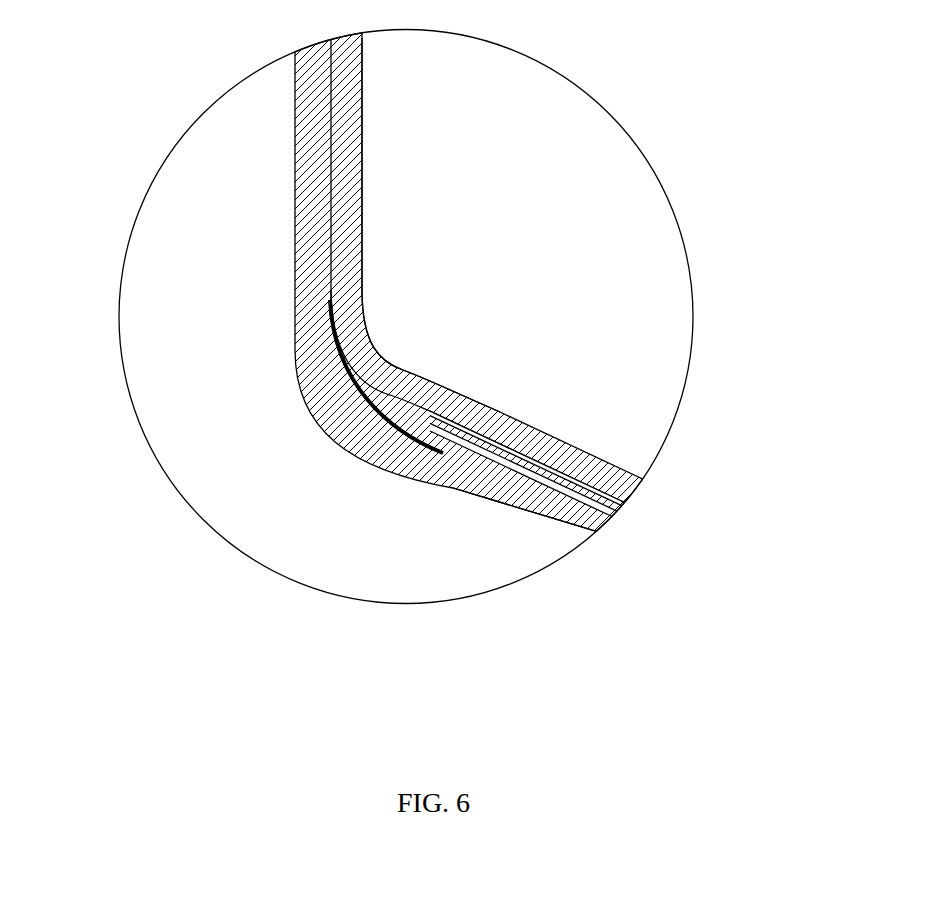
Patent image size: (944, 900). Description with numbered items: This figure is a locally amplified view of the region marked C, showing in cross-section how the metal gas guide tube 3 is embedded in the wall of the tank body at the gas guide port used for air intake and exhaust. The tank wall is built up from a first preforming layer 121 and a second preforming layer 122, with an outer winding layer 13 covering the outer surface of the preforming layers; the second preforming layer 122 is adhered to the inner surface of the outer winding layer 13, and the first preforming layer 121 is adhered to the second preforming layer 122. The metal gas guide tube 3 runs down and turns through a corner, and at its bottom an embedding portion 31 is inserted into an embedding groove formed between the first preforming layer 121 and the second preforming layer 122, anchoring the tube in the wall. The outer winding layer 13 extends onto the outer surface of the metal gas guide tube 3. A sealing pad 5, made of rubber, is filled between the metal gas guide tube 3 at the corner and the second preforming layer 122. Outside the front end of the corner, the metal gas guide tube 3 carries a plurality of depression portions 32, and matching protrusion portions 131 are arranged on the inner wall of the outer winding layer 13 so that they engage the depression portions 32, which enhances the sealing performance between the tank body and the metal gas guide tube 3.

The metal gas guide tube 3 is at (305, 128).
The depression portions 32 is at (330, 205).
The protrusion portions 131 is at (363, 225).
The outer winding layer 13 is at (403, 367).
The sealing pad 5 is at (492, 404).
The second preforming layer 122 is at (587, 452).
The embedding portion 31 is at (620, 517).
The first preforming layer 121 is at (472, 483).
The local amplified region C is at (160, 465).